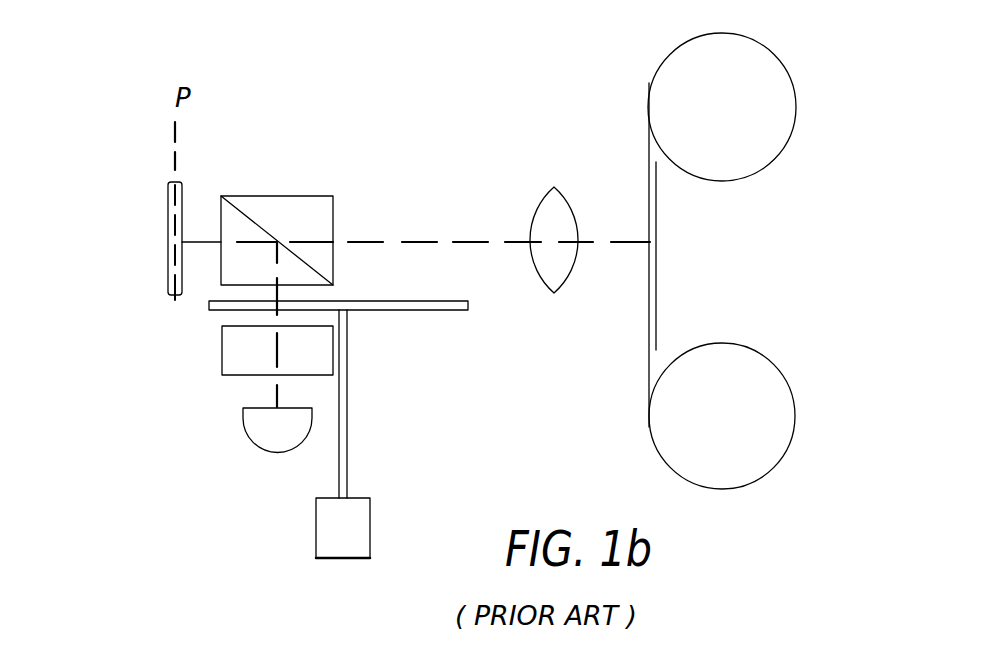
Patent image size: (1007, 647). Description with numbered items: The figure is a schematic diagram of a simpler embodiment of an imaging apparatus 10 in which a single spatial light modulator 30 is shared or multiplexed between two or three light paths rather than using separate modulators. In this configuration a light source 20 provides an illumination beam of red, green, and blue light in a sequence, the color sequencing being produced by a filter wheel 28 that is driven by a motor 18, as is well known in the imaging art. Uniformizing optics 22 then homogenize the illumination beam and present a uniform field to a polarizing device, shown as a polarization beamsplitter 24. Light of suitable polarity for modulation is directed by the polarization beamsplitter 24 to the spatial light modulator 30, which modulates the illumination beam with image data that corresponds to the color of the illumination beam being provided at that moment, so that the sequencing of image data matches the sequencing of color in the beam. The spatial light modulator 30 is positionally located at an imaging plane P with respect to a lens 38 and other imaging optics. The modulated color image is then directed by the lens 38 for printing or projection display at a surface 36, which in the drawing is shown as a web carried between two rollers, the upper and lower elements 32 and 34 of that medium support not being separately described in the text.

The imaging apparatus 10 is at (180, 45).
The motor 18 is at (370, 510).
The light source 20 is at (268, 451).
The uniformizing optics 22 is at (229, 375).
The polarization beamsplitter 24 is at (285, 196).
The filter wheel 28 is at (423, 311).
The spatial light modulator 30 is at (168, 270).
The film 32 is at (648, 182).
The roller 34 is at (790, 65).
The surface 36 is at (657, 302).
The lens 38 is at (546, 205).